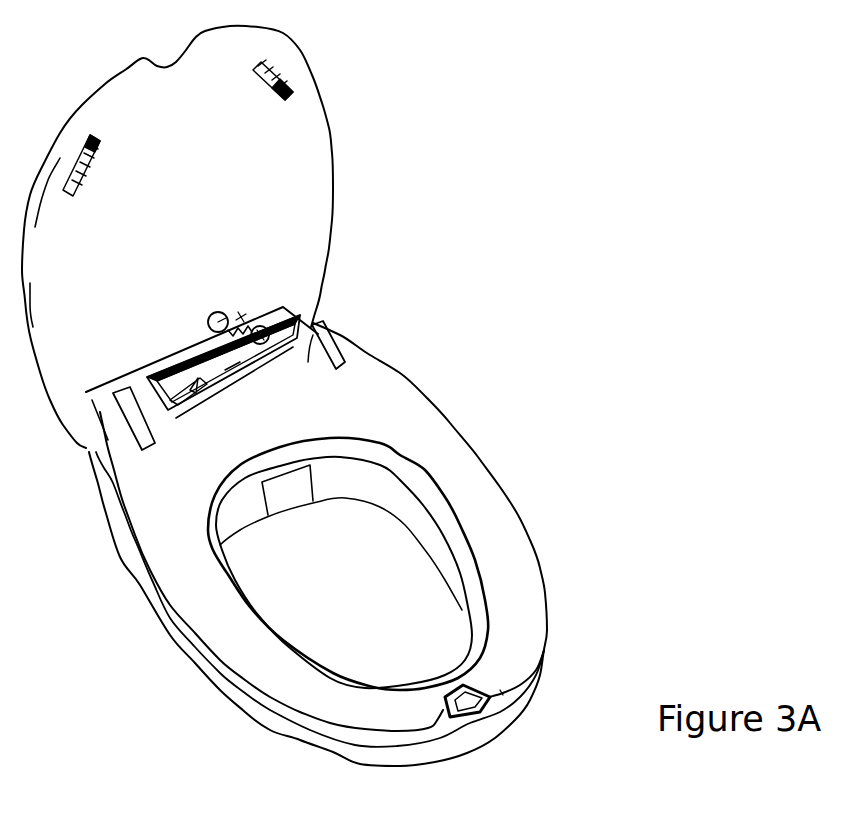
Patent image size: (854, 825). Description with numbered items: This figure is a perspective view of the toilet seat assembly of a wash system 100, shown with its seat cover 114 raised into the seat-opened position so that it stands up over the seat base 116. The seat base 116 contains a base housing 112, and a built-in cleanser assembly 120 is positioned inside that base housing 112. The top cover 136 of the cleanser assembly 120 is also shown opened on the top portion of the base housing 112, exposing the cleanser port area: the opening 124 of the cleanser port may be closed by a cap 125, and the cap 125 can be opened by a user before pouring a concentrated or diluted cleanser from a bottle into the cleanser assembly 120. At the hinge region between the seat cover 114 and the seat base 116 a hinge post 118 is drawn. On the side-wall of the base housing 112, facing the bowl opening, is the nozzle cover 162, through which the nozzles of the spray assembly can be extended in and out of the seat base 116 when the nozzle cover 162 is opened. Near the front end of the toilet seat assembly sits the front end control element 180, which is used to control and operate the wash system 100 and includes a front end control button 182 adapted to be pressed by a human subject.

The wash system 100 is at (527, 349).
The base housing 112 is at (173, 361).
The seat cover 114 is at (203, 217).
The seat base 116 is at (490, 487).
The hinge post 118 is at (313, 326).
The cleanser assembly 120 is at (263, 240).
The opening 124 is at (262, 325).
The cap 125 is at (219, 312).
The top cover 136 is at (207, 385).
The nozzle cover 162 is at (287, 490).
The front end control element 180 is at (489, 694).
The front end control button 182 is at (477, 701).